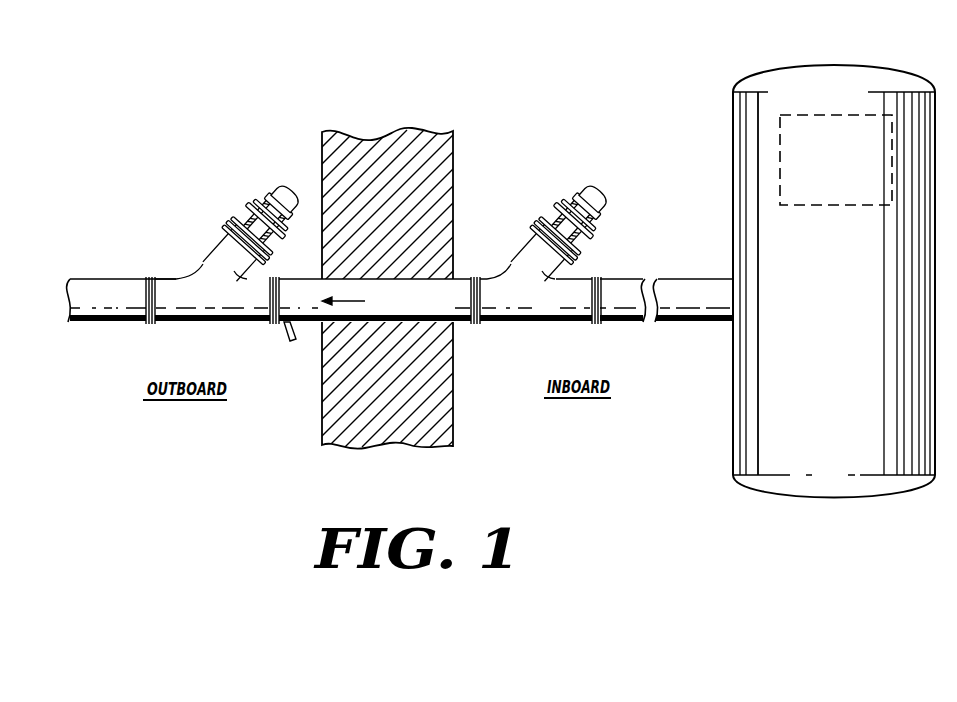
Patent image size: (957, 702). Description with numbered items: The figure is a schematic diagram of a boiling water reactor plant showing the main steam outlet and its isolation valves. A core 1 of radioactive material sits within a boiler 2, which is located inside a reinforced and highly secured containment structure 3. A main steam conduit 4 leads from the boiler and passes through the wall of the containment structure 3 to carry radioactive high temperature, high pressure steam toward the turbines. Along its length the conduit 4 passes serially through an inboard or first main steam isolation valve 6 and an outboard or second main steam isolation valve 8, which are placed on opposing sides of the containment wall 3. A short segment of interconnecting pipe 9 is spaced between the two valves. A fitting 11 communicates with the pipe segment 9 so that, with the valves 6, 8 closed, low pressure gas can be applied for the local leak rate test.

The core 1 is at (846, 186).
The boiler 2 is at (838, 396).
The containment structure 3 is at (453, 166).
The main steam conduit 4 is at (116, 290).
The inboard main steam isolation valve 6 is at (540, 310).
The outboard main steam isolation valve 8 is at (177, 318).
The interconnecting pipe segment 9 is at (459, 322).
The fitting 11 is at (283, 334).